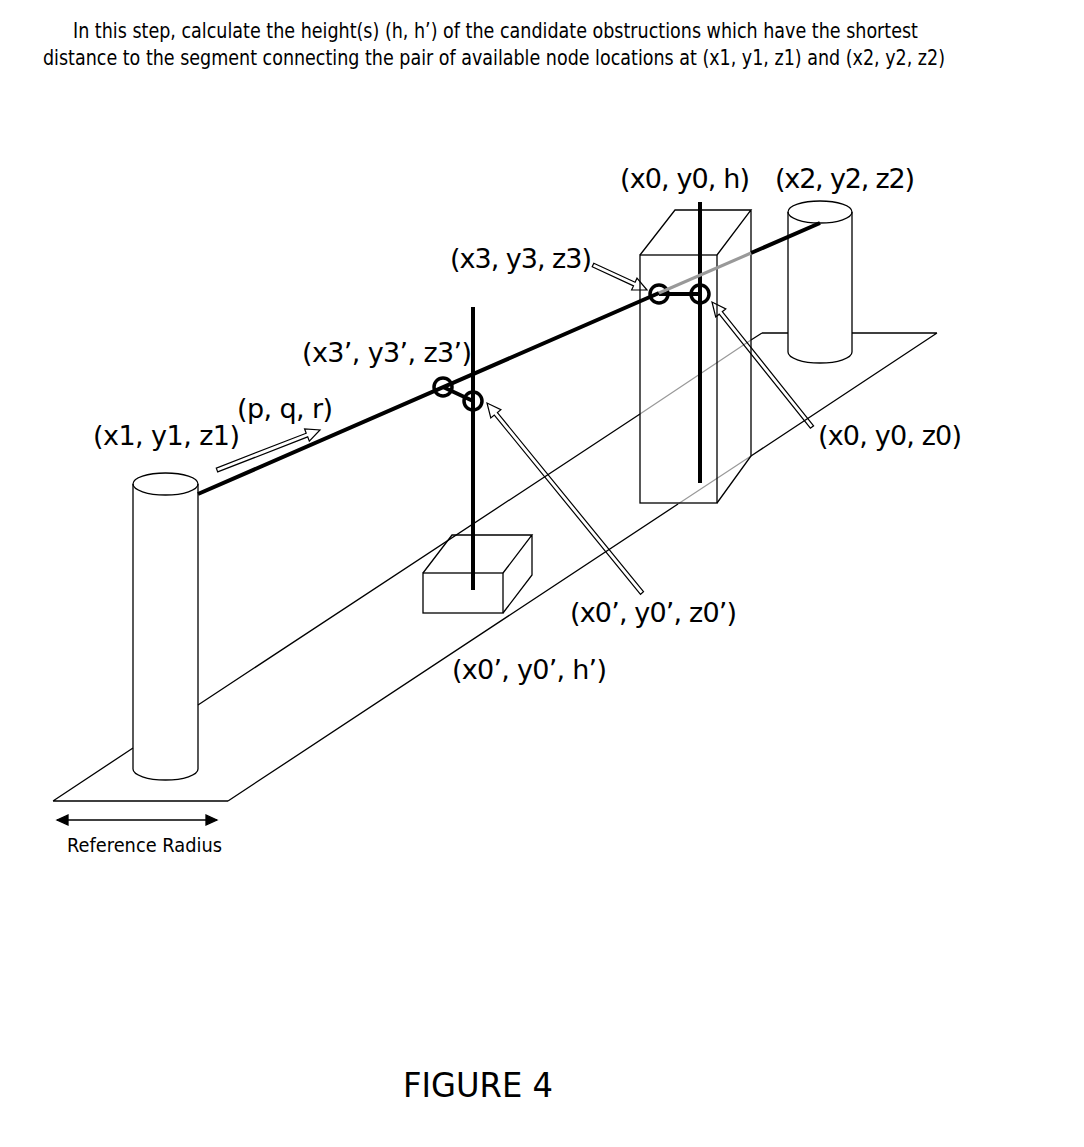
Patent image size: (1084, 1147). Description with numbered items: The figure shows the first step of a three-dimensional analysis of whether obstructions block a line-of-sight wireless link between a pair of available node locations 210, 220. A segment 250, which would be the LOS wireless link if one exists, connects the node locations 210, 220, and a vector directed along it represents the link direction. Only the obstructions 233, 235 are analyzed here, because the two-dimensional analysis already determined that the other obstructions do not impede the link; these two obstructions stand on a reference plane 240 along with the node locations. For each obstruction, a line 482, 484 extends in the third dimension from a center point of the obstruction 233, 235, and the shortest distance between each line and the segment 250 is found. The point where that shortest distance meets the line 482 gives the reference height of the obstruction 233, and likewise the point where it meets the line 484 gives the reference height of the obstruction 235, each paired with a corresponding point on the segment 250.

The available node location 210 is at (178, 628).
The available node location 220 is at (845, 309).
The obstruction 233 is at (470, 609).
The obstruction 235 is at (683, 375).
The reference plane 240 is at (287, 728).
The segment 250 is at (557, 330).
The line 482 is at (472, 451).
The line 484 is at (707, 383).